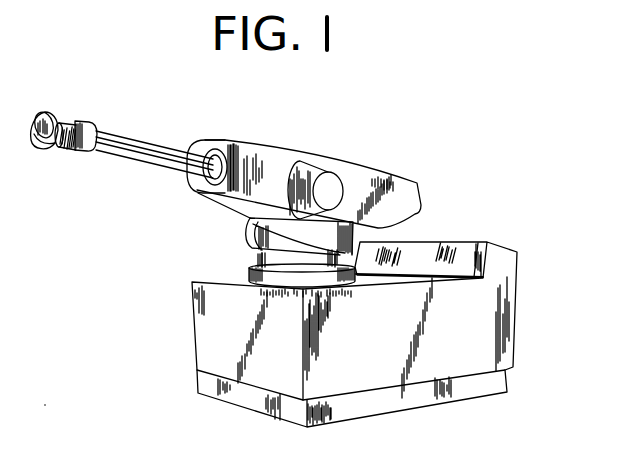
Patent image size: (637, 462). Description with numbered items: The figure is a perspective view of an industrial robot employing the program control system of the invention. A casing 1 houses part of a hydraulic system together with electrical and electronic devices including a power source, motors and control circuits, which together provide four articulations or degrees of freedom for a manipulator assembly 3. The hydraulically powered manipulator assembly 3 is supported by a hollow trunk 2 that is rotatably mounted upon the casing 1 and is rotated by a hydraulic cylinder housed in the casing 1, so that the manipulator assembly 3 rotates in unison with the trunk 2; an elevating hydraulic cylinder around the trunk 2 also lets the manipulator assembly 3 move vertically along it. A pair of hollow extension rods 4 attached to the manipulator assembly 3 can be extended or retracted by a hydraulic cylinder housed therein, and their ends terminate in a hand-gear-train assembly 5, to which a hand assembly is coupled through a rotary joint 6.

The casing 1 is at (492, 306).
The hollow trunk 2 is at (275, 257).
The manipulator assembly 3 is at (279, 153).
The extension rods 4 is at (153, 150).
The hand-gear-train assembly 5 is at (79, 140).
The rotary joint 6 is at (49, 121).